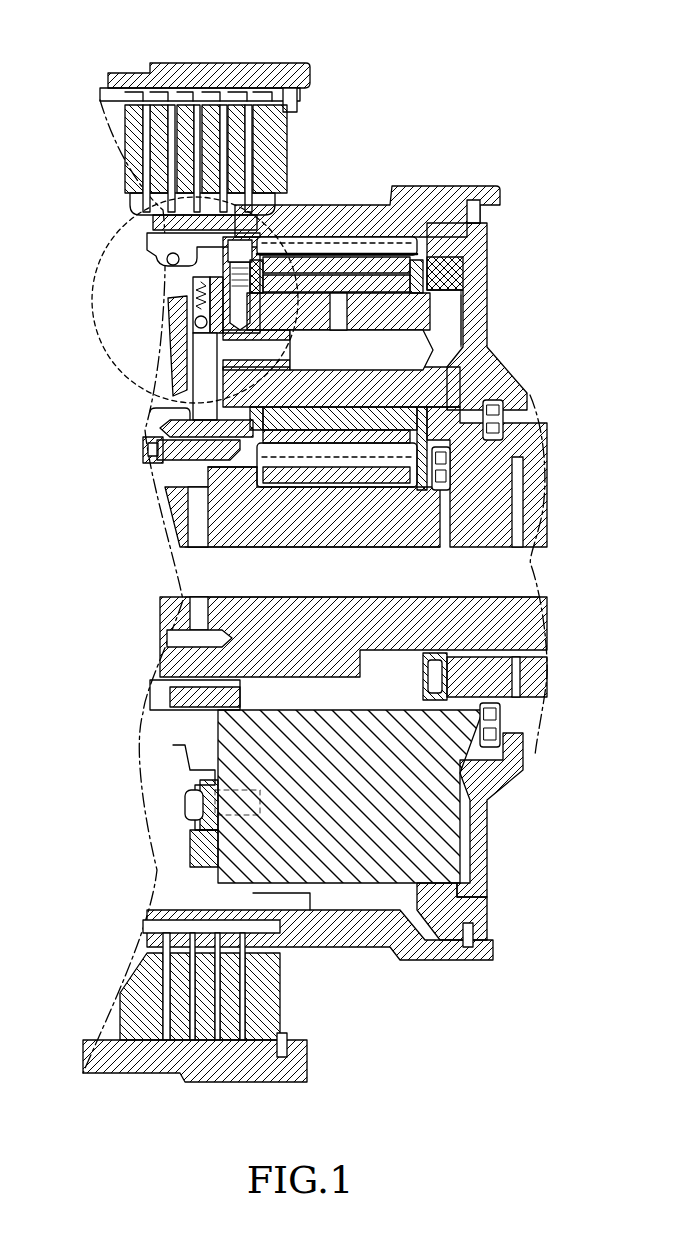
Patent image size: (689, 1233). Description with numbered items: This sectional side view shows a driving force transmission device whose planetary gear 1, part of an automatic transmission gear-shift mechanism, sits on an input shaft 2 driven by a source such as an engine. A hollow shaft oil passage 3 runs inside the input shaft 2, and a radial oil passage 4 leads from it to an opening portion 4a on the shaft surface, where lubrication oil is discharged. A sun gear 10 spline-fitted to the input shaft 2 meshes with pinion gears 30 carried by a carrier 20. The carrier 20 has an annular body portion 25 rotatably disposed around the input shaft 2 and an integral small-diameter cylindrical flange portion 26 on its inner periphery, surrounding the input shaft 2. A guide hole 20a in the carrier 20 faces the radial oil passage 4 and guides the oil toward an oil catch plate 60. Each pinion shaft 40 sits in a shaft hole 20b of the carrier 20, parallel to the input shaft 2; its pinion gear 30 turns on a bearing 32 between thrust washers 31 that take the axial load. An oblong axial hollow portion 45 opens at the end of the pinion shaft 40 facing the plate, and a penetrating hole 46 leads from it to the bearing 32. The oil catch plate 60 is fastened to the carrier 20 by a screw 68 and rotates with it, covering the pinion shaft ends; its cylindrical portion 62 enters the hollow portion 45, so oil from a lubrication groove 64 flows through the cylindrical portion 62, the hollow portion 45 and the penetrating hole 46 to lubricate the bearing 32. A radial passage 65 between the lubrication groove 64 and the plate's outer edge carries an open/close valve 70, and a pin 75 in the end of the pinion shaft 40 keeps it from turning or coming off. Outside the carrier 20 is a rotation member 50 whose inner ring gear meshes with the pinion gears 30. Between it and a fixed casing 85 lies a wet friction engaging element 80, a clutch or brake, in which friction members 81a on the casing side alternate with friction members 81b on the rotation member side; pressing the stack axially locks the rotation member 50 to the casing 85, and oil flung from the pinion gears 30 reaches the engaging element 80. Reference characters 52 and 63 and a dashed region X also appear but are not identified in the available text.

The planetary gear 1 is at (489, 175).
The input shaft 2 is at (520, 628).
The shaft oil passage 3 is at (513, 573).
The radial oil passage 4 is at (197, 520).
The opening portion 4a is at (190, 463).
The sun gear 10 is at (230, 473).
The carrier 20 is at (190, 427).
The guide hole 20a is at (150, 427).
The shaft hole 20b is at (450, 298).
The body portion 25 is at (447, 263).
The flange portion 26 is at (533, 470).
The pinion gear 30 is at (340, 260).
The washer 31 is at (257, 262).
The bearing 32 is at (307, 280).
The pinion shaft 40 is at (450, 310).
The hollow portion 45 is at (430, 337).
The penetrating hole 46 is at (340, 330).
The rotation member 50 is at (377, 198).
The fastening bolt 52 is at (147, 227).
The oil catch plate 60 is at (183, 307).
The cylindrical portion 62 is at (290, 337).
The holder 63 is at (180, 367).
The lubrication groove 64 is at (185, 392).
The passage 65 is at (165, 270).
The screw 68 is at (180, 803).
The open/close valve 70 is at (196, 323).
The pin 75 is at (157, 237).
The engaging element 80 is at (299, 110).
The friction members 81a is at (157, 110).
The friction members 81b is at (172, 110).
The casing 85 is at (260, 67).
The enlarged region X is at (113, 227).